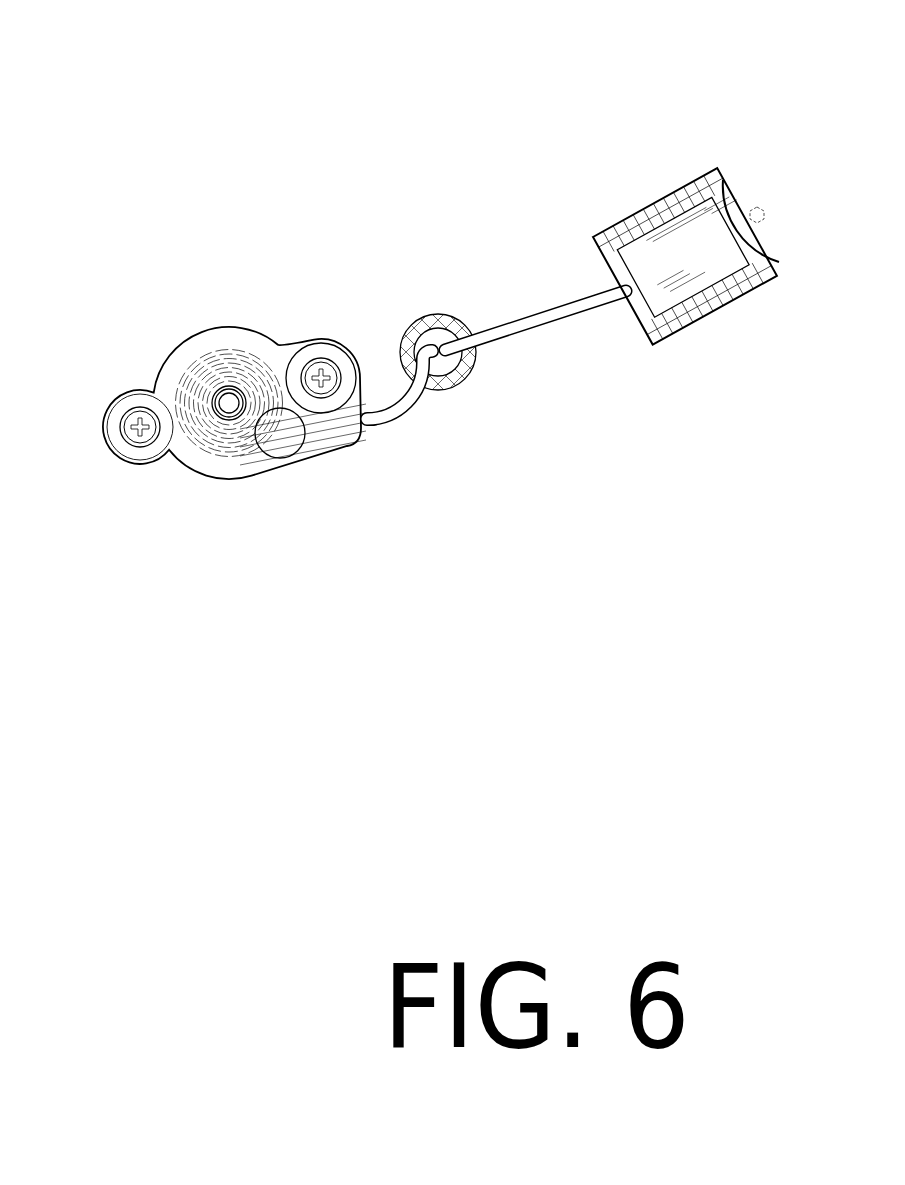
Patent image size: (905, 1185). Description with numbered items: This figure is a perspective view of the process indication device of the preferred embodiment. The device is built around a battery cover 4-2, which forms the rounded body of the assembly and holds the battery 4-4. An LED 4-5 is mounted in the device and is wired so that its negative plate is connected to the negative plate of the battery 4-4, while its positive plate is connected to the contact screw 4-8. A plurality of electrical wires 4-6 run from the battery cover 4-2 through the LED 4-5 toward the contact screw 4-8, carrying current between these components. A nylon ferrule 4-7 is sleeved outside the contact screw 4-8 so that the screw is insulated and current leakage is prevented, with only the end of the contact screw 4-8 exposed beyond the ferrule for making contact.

The battery cover 4-2 is at (211, 520).
The battery 4-4 is at (254, 454).
The LED 4-5 is at (482, 400).
The electrical wires 4-6 is at (506, 280).
The nylon ferrule 4-7 is at (624, 179).
The contact screw 4-8 is at (733, 155).